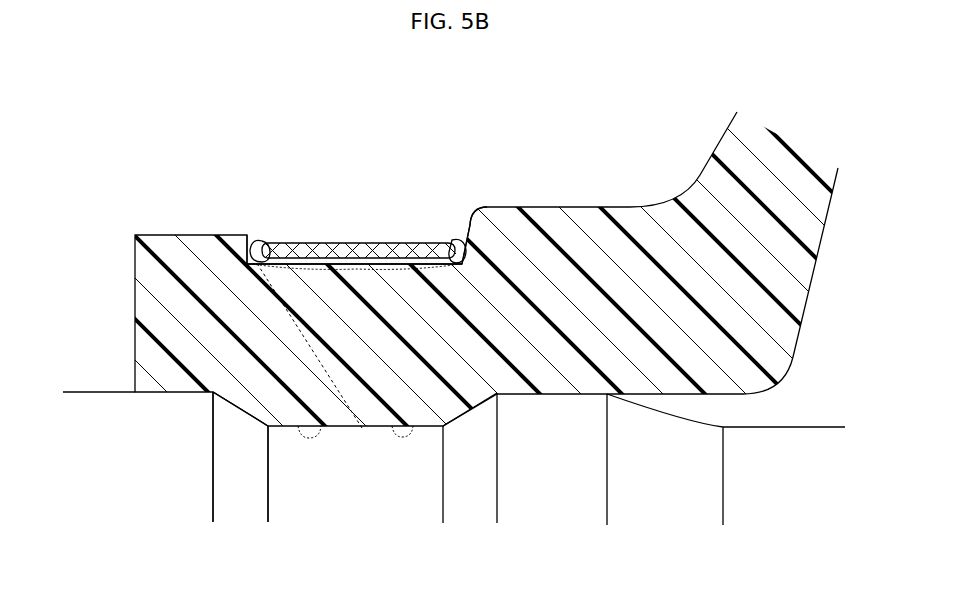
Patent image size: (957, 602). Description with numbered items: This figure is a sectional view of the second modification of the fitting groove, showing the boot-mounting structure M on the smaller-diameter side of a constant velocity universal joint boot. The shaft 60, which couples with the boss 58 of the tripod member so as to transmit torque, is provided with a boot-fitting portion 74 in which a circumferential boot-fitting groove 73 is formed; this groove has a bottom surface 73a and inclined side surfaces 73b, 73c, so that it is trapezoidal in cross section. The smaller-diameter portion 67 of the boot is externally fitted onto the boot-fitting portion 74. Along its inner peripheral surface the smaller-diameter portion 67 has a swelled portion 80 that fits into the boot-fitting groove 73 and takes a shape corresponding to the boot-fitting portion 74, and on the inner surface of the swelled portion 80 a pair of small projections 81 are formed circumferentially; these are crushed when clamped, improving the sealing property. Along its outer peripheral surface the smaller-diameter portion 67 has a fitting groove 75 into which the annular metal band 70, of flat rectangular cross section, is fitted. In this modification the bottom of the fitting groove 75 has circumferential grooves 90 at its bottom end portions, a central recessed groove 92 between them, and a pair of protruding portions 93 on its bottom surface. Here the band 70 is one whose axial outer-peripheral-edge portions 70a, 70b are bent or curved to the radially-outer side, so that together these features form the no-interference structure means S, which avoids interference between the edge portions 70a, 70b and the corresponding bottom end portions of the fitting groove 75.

The boss 58 is at (598, 184).
The shaft 60 is at (95, 380).
The smaller-diameter portion 67 is at (323, 286).
The band 70 is at (398, 230).
The axial outer-peripheral-edge portion 70a is at (476, 225).
The axial outer-peripheral-edge portion 70b is at (250, 243).
The boot-fitting groove 73 is at (432, 427).
The bottom surface 73a is at (340, 497).
The inclined side surface 73b is at (240, 427).
The inclined side surface 73c is at (467, 432).
The boot-fitting portion 74 is at (495, 447).
The fitting groove 75 is at (352, 262).
The swelled portion 80 is at (362, 428).
The small projection 81 is at (310, 425).
The circumferential groove 90 is at (257, 246).
The central recessed groove 92 is at (383, 264).
The protruding portion 93 is at (292, 266).
The boot-mounting structure M is at (339, 228).
The no-interference structure means S is at (251, 249).